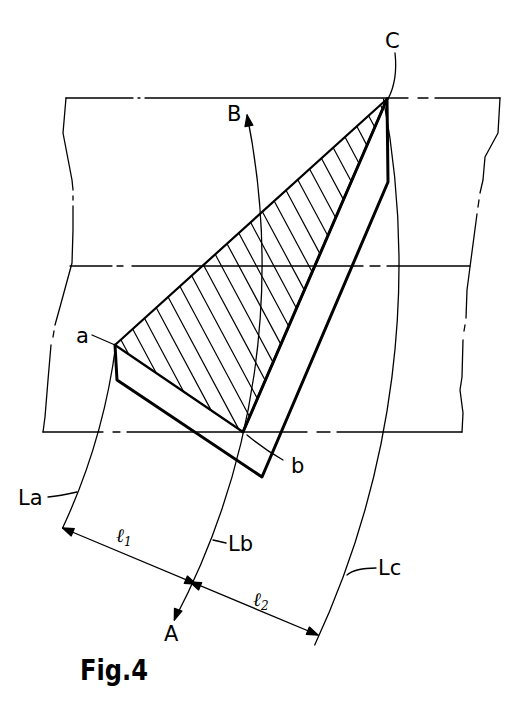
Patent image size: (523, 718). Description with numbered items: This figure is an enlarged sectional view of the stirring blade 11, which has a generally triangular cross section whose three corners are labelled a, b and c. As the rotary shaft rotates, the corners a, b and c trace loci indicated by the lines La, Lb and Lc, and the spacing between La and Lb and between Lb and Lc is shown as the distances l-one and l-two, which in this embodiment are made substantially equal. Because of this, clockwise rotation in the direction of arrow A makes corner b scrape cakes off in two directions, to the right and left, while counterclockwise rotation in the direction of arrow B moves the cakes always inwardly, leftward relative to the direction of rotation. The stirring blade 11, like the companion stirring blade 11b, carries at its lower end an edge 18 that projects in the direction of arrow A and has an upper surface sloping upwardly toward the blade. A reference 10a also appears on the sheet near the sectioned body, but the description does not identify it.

The workpiece block 10a is at (450, 100).
The stirring blade 11 is at (297, 180).
The edge 18 is at (339, 296).
The stirring blade 11b is at (507, 618).